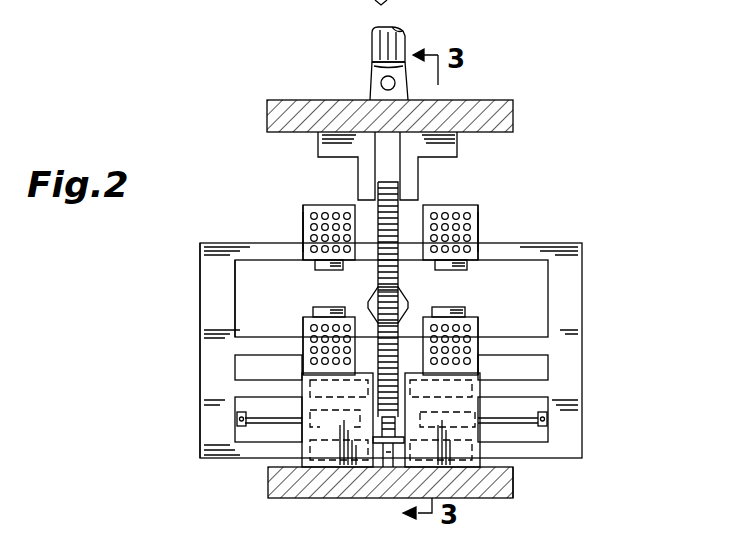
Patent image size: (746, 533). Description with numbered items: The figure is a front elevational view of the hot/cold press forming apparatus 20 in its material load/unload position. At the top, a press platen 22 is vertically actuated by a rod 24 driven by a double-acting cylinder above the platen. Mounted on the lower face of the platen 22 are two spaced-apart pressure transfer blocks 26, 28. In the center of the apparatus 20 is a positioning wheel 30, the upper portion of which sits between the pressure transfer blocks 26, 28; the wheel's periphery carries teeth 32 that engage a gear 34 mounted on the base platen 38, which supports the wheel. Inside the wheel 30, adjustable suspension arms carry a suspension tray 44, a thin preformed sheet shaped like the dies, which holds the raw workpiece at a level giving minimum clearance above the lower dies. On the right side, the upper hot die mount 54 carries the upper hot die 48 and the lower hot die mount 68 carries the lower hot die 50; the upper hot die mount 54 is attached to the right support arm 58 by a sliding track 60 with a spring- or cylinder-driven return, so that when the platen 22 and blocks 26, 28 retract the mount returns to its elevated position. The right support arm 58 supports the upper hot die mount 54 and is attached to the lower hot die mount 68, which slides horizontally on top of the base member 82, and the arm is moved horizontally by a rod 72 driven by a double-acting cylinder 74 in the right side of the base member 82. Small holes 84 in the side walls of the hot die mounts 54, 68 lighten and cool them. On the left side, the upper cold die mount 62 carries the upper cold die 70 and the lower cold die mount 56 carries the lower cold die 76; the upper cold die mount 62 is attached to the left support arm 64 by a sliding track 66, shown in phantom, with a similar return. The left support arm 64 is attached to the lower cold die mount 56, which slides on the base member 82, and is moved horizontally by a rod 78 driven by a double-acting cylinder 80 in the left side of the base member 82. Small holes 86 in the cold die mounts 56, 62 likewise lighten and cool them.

The hot/cold press forming apparatus 20 is at (642, 167).
The press platen 22 is at (513, 118).
The rod 24 is at (402, 44).
The pressure transfer block 26 is at (318, 143).
The pressure transfer block 28 is at (457, 145).
The positioning wheel 30 is at (399, 228).
The teeth 32 is at (384, 290).
The gear 34 is at (389, 470).
The base platen 38 is at (514, 486).
The suspension tray 44 is at (410, 305).
The upper hot die 48 is at (468, 266).
The lower hot die 50 is at (462, 310).
The upper hot die mount 54 is at (452, 213).
The lower cold die mount 56 is at (312, 318).
The right support arm 58 is at (572, 283).
The sliding track 60 is at (492, 223).
The upper cold die mount 62 is at (350, 205).
The left support arm 64 is at (205, 300).
The sliding track 66 is at (303, 219).
The lower hot die mount 68 is at (431, 363).
The upper cold die 70 is at (323, 270).
The rod 72 is at (515, 410).
The double-acting cylinder 74 is at (498, 440).
The lower cold die 76 is at (336, 307).
The rod 78 is at (258, 413).
The double-acting cylinder 80 is at (300, 440).
The base member 82 is at (325, 402).
The small holes 84 is at (470, 212).
The small holes 86 is at (313, 216).